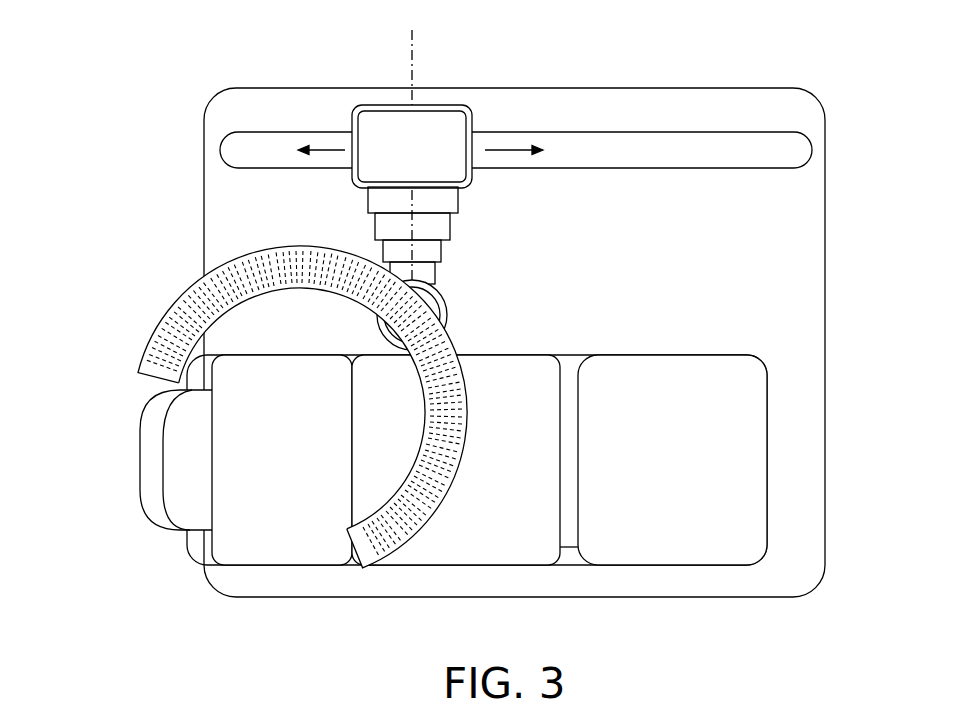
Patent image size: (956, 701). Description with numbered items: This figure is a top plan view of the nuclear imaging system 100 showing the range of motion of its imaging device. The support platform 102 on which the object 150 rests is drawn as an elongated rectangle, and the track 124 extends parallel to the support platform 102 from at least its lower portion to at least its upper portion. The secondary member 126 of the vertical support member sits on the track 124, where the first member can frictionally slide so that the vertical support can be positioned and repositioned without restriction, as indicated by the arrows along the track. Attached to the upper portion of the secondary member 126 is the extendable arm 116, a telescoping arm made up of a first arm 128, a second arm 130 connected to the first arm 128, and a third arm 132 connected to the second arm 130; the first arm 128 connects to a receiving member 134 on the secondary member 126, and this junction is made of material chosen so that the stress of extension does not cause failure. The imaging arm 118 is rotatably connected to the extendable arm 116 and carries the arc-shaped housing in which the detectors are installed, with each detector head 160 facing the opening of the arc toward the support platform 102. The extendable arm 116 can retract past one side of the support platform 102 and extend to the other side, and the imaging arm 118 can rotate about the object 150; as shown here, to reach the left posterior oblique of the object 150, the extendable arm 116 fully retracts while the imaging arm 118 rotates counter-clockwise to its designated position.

The nuclear imaging system 100 is at (118, 68).
The support platform 102 is at (683, 338).
The extendable arm 116 is at (310, 186).
The imaging arm 118 is at (455, 508).
The track 124 is at (758, 151).
The secondary member 126 is at (373, 123).
The first arm 128 is at (378, 232).
The second arm 130 is at (440, 248).
The third arm 132 is at (435, 272).
The receiving member 134 is at (448, 202).
The object 150 is at (163, 319).
The detector head 160 is at (287, 300).